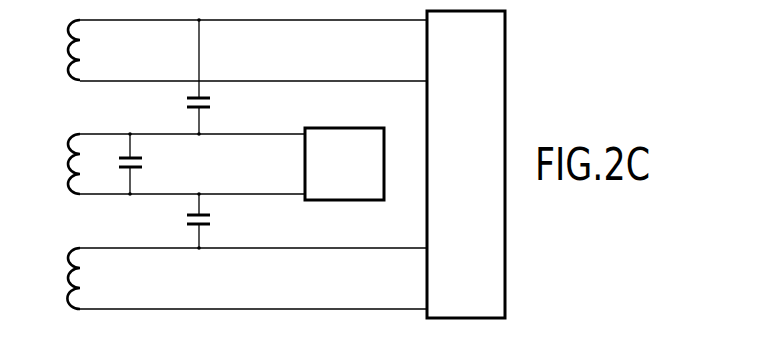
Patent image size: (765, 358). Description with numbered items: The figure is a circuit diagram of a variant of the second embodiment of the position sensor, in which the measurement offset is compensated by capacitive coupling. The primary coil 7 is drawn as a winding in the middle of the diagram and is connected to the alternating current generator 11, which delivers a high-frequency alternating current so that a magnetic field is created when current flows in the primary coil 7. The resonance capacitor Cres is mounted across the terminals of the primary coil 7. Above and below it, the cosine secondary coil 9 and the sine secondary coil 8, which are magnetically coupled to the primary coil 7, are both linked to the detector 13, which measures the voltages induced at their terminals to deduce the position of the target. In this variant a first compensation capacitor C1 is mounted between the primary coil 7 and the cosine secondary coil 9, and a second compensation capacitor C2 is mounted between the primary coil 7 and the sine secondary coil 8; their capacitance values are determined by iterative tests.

The primary coil 7 is at (69, 162).
The sine secondary coil 8 is at (69, 283).
The cosine secondary coil 9 is at (69, 48).
The alternating current generator 11 is at (335, 173).
The detector 13 is at (455, 173).
The first compensation capacitor C1 is at (211, 77).
The second compensation capacitor C2 is at (211, 221).
The resonance capacitor Cres is at (152, 164).